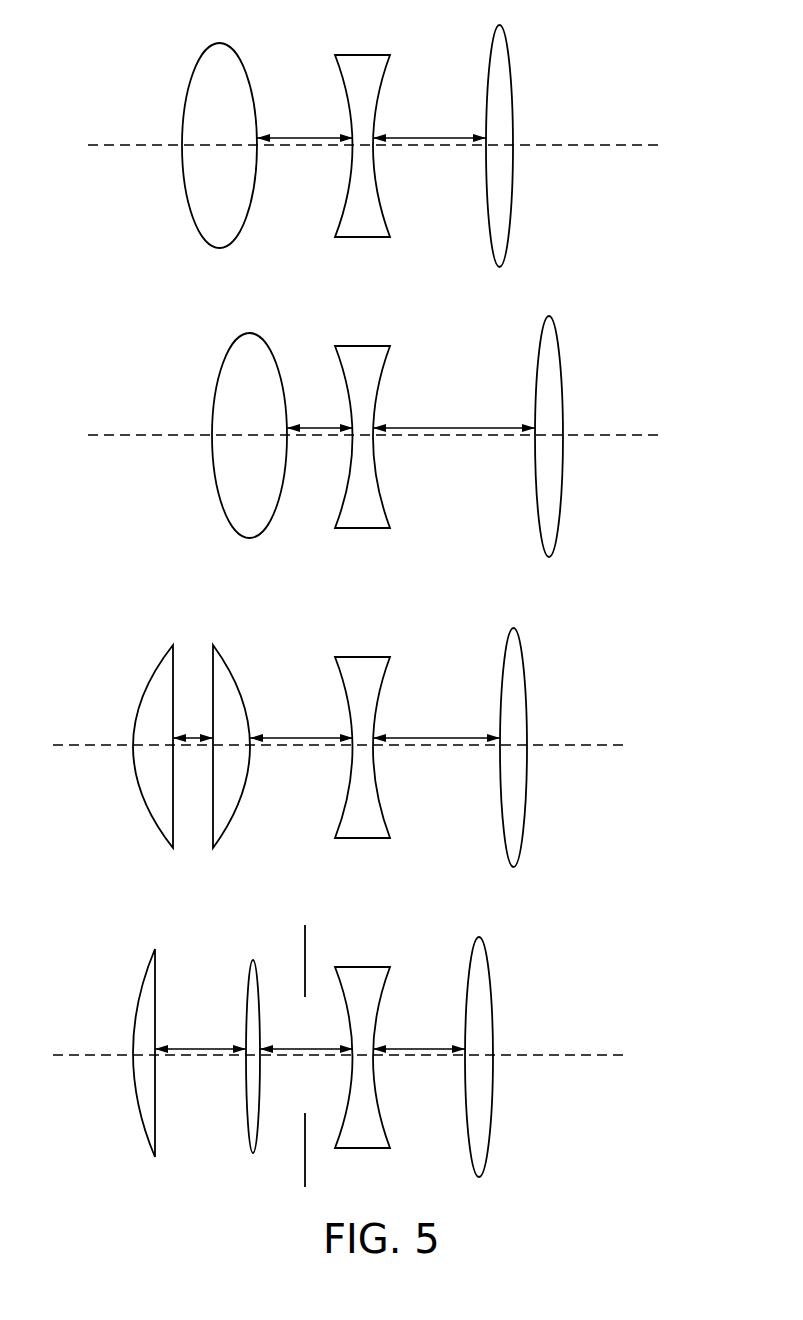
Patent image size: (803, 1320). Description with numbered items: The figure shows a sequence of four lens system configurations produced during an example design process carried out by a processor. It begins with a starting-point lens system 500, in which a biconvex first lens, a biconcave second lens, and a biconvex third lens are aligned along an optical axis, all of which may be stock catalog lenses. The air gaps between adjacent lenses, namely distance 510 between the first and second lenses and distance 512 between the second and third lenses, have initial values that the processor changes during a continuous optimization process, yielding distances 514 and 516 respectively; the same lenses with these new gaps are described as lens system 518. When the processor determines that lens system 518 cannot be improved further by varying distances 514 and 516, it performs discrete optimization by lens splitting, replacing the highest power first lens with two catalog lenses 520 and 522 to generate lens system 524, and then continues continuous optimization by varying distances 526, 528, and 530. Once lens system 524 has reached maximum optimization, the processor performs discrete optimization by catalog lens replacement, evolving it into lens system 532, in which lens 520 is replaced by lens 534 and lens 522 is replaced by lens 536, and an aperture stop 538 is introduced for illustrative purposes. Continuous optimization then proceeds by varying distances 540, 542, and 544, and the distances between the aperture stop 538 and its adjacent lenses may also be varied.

The lens system 500 is at (631, 43).
The distance 510 is at (305, 126).
The distance 512 is at (429, 126).
The distance 514 is at (320, 416).
The distance 516 is at (454, 416).
The lens system 518 is at (631, 324).
The catalog lens 520 is at (148, 678).
The catalog lens 522 is at (236, 665).
The lens system 524 is at (628, 629).
The distance 526 is at (194, 724).
The distance 528 is at (301, 726).
The distance 530 is at (436, 726).
The lens system 532 is at (625, 924).
The lens 534 is at (143, 975).
The lens 536 is at (247, 988).
The aperture stop 538 is at (306, 958).
The distance 540 is at (200, 1037).
The distance 542 is at (306, 1037).
The distance 544 is at (419, 1037).